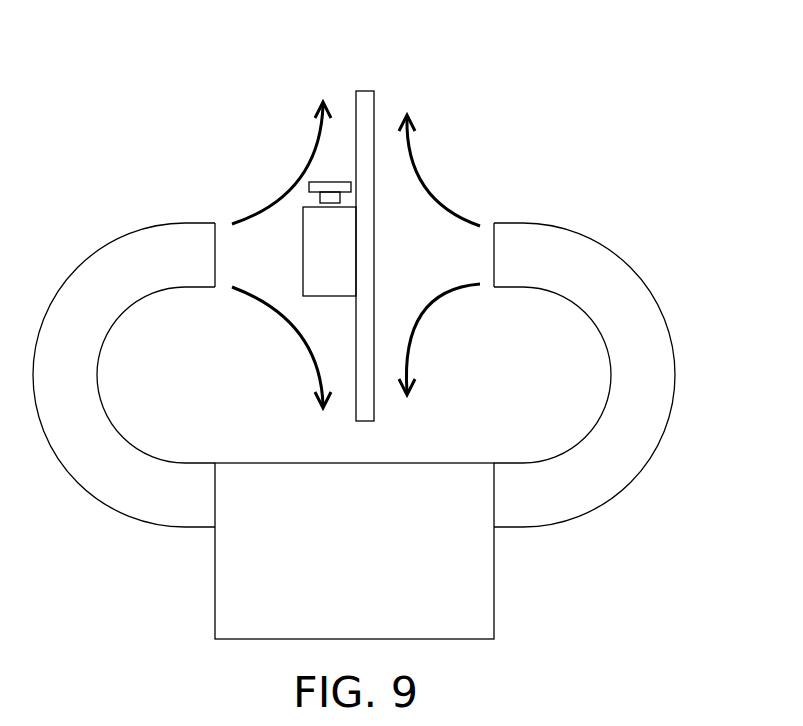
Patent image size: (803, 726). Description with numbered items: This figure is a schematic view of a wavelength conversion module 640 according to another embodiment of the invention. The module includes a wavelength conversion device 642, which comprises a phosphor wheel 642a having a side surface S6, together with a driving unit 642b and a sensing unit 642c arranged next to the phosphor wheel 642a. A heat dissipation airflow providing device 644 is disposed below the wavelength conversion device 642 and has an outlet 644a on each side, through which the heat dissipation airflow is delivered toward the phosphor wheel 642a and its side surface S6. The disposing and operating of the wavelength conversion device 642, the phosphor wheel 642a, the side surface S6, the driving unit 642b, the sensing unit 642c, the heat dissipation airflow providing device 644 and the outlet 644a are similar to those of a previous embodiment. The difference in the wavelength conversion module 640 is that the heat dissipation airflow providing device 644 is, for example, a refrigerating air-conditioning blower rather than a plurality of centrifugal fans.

The wavelength conversion module 640 is at (690, 663).
The heat dissipation airflow providing device 644 is at (477, 598).
The outlet 644a is at (212, 253).
The wavelength conversion device 642 is at (389, 105).
The phosphor wheel 642a is at (366, 98).
The driving unit 642b is at (320, 234).
The sensing unit 642c is at (330, 183).
The side surface S6 is at (346, 128).